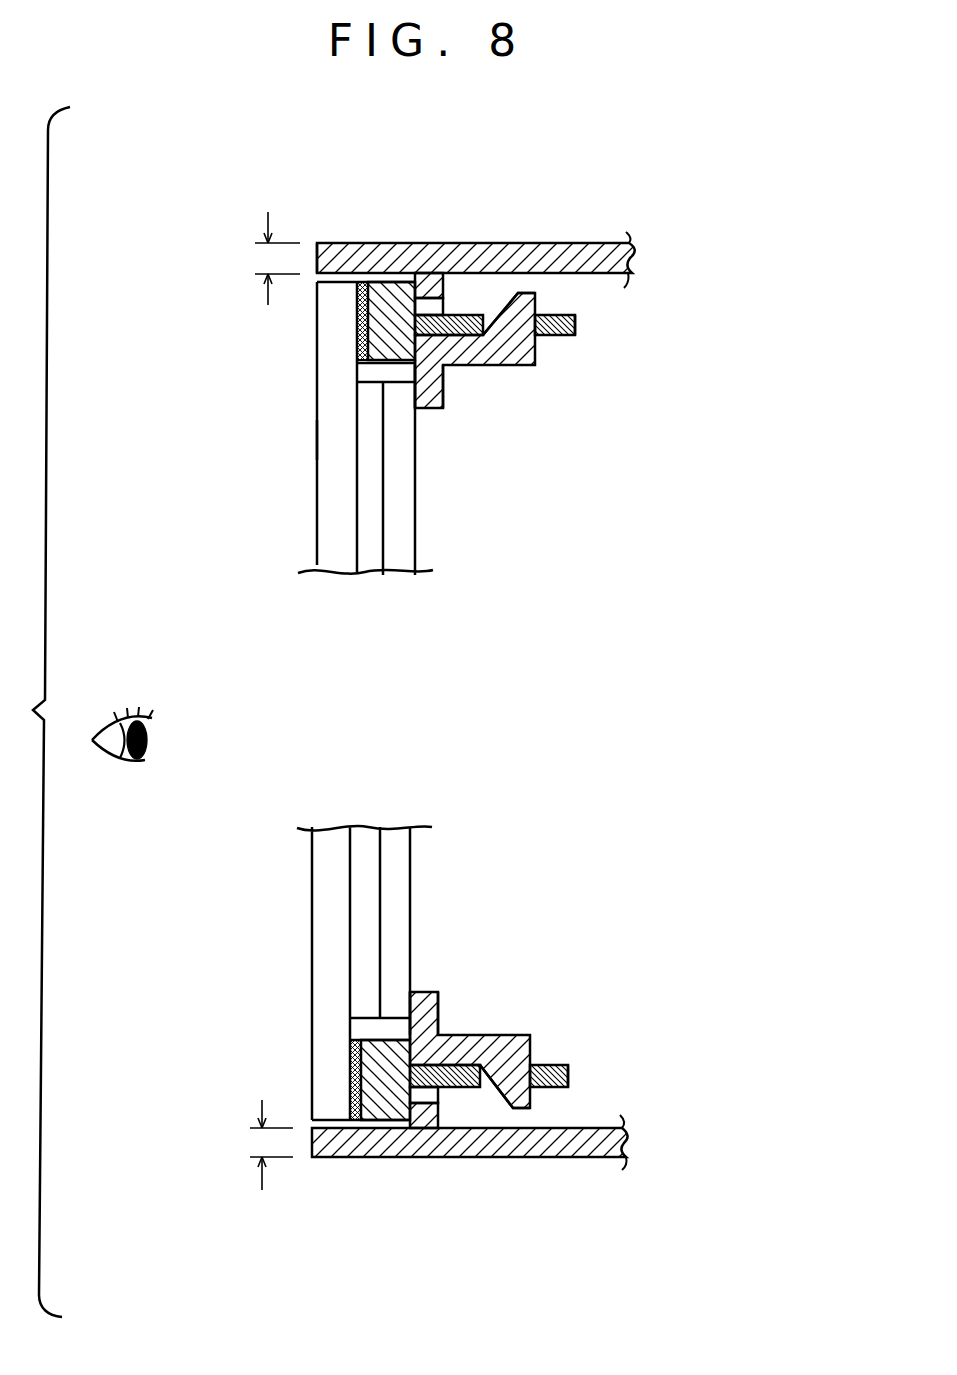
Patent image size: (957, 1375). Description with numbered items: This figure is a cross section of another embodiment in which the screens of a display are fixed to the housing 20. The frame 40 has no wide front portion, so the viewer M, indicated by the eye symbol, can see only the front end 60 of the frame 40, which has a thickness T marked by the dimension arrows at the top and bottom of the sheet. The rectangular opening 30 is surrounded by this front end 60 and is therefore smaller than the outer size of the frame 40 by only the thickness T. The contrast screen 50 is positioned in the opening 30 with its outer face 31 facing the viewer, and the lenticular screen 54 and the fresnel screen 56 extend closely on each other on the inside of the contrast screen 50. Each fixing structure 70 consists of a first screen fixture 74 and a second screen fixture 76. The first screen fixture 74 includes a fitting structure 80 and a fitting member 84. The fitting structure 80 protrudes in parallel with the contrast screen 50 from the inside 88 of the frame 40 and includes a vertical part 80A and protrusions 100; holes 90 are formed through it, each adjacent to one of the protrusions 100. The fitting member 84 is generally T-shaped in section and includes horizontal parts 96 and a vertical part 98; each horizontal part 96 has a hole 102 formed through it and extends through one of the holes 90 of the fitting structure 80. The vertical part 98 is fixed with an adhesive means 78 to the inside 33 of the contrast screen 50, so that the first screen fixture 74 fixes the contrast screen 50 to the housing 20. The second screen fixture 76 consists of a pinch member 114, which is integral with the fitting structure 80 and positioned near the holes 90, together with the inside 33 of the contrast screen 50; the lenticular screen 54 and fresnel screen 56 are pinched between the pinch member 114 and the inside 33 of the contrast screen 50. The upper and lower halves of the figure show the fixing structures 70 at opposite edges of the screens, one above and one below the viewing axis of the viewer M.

The housing 20 is at (614, 178).
The rectangular opening 30 is at (276, 613).
The housing outer surface 31 is at (317, 440).
The inside of the contrast screen 33 is at (363, 517).
The frame 40 is at (467, 263).
The contrast screen 50 is at (332, 895).
The lenticular screen 54 is at (363, 848).
The fresnel screen 56 is at (393, 880).
The front end of the frame 60 is at (318, 252).
The fixing structure 70 is at (694, 362).
The first screen fixture 74 is at (443, 283).
The second screen fixture 76 is at (437, 1010).
The adhesive means 78 is at (357, 1112).
The fitting structure 80 is at (573, 320).
The vertical part of the fitting structure 80A is at (425, 1114).
The fitting member 84 is at (520, 1108).
The inside of the frame 88 is at (393, 310).
The hole 90 is at (352, 1058).
The horizontal part 96 is at (466, 1095).
The vertical part of the fitting member 98 is at (390, 1100).
The protrusion 100 is at (533, 1092).
The hole 102 is at (480, 1082).
The pinch member 114 is at (428, 1002).
The thickness T is at (262, 1143).
The viewer M is at (120, 760).